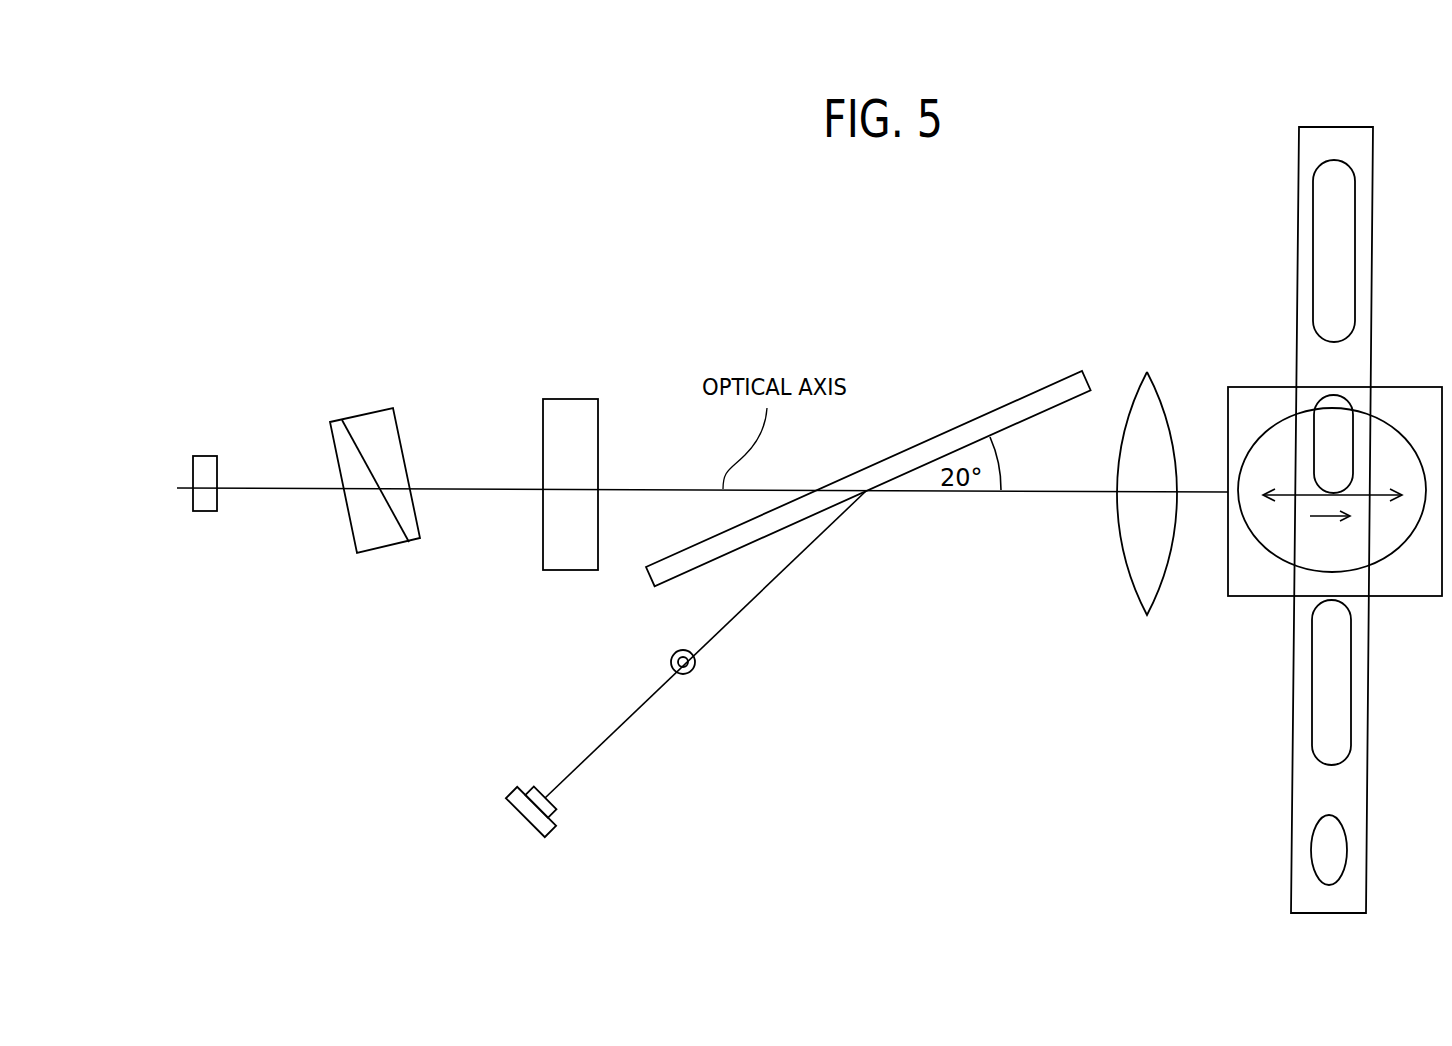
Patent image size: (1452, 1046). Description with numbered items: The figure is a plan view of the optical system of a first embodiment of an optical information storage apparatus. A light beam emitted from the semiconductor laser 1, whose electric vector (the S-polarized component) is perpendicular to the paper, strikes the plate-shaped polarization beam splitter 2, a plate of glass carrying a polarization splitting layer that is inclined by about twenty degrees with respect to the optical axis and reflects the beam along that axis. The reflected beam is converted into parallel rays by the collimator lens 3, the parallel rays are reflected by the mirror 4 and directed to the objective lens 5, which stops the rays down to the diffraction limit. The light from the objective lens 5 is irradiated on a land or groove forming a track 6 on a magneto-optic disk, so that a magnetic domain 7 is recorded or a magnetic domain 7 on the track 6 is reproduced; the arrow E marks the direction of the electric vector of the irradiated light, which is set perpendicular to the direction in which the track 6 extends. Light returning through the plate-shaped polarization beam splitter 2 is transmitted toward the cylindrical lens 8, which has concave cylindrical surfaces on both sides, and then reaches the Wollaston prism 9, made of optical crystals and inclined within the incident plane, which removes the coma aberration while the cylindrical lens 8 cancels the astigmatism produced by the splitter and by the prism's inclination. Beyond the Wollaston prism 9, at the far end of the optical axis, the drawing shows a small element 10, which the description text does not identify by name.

The semiconductor laser 1 is at (513, 797).
The plate-shaped polarization beam splitter 2 is at (896, 462).
The collimator lens 3 is at (1135, 577).
The mirror 4 is at (1402, 587).
The objective lens 5 is at (1383, 448).
The track 6 is at (1368, 866).
The magnetic domain 7 is at (1348, 693).
The cylindrical lens 8 is at (586, 431).
The Wollaston prism 9 is at (396, 463).
The photodetector 10 is at (210, 460).